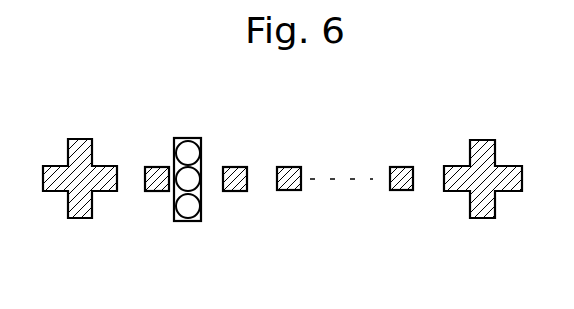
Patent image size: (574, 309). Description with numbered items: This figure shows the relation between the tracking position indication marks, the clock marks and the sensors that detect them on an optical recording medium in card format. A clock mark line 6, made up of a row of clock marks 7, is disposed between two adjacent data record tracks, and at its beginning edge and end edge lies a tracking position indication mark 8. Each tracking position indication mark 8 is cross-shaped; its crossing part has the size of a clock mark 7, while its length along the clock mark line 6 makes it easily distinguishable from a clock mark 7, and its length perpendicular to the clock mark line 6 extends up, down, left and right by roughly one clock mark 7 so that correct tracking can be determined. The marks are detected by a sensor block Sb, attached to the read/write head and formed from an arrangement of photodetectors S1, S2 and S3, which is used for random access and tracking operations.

The clock mark line 6 is at (340, 168).
The clock mark 7 is at (292, 165).
The tracking position indication mark 8 is at (85, 139).
The sensor block Sb is at (192, 138).
The photodetector S1 is at (193, 155).
The photodetector S2 is at (192, 178).
The photodetector S3 is at (187, 212).